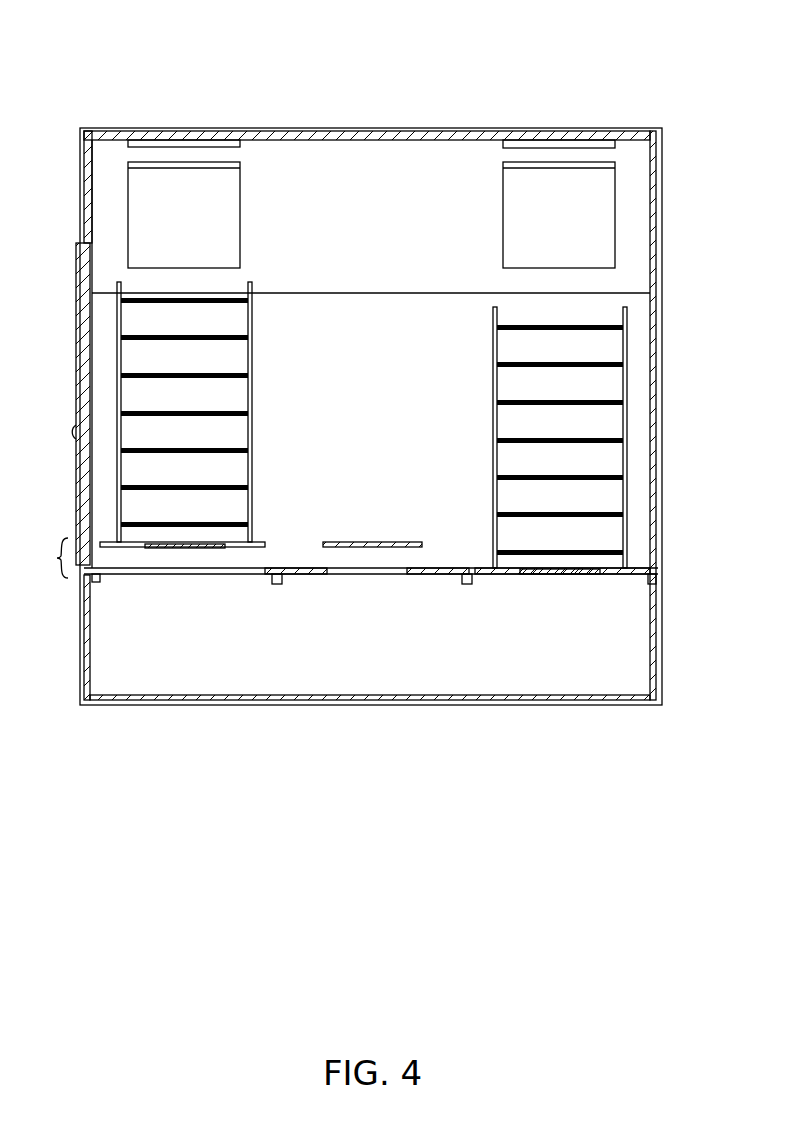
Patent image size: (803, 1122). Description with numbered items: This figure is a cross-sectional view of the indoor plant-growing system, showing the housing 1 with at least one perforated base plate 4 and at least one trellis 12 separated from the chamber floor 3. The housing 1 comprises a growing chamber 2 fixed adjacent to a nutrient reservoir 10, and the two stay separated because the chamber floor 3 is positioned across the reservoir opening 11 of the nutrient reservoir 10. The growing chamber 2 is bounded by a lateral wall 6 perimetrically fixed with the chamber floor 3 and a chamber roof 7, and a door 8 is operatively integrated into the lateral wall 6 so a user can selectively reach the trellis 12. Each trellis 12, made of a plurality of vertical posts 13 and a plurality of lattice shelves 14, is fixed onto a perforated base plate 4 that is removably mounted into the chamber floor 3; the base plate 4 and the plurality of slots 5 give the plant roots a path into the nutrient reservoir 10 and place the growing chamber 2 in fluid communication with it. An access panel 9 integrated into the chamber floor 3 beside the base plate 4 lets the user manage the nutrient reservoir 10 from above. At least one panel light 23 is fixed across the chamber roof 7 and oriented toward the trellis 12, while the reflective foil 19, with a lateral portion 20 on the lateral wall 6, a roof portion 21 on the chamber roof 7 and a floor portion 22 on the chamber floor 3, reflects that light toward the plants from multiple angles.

The housing 1 is at (513, 95).
The growing chamber 2 is at (684, 497).
The chamber floor 3 is at (290, 577).
The perforated base plate 4 is at (115, 549).
The slots 5 is at (600, 600).
The lateral wall 6 is at (653, 298).
The chamber roof 7 is at (392, 140).
The door 8 is at (80, 262).
The access panel 9 is at (372, 549).
The nutrient reservoir 10 is at (715, 598).
The reservoir opening 11 is at (265, 569).
The trellis 12 is at (361, 398).
The vertical posts 13 is at (118, 285).
The lattice shelves 14 is at (237, 345).
The reflective foil 19 is at (108, 160).
The lateral portion 20 is at (89, 130).
The roof portion 21 is at (233, 140).
The floor portion 22 is at (100, 540).
The panel light 23 is at (250, 143).